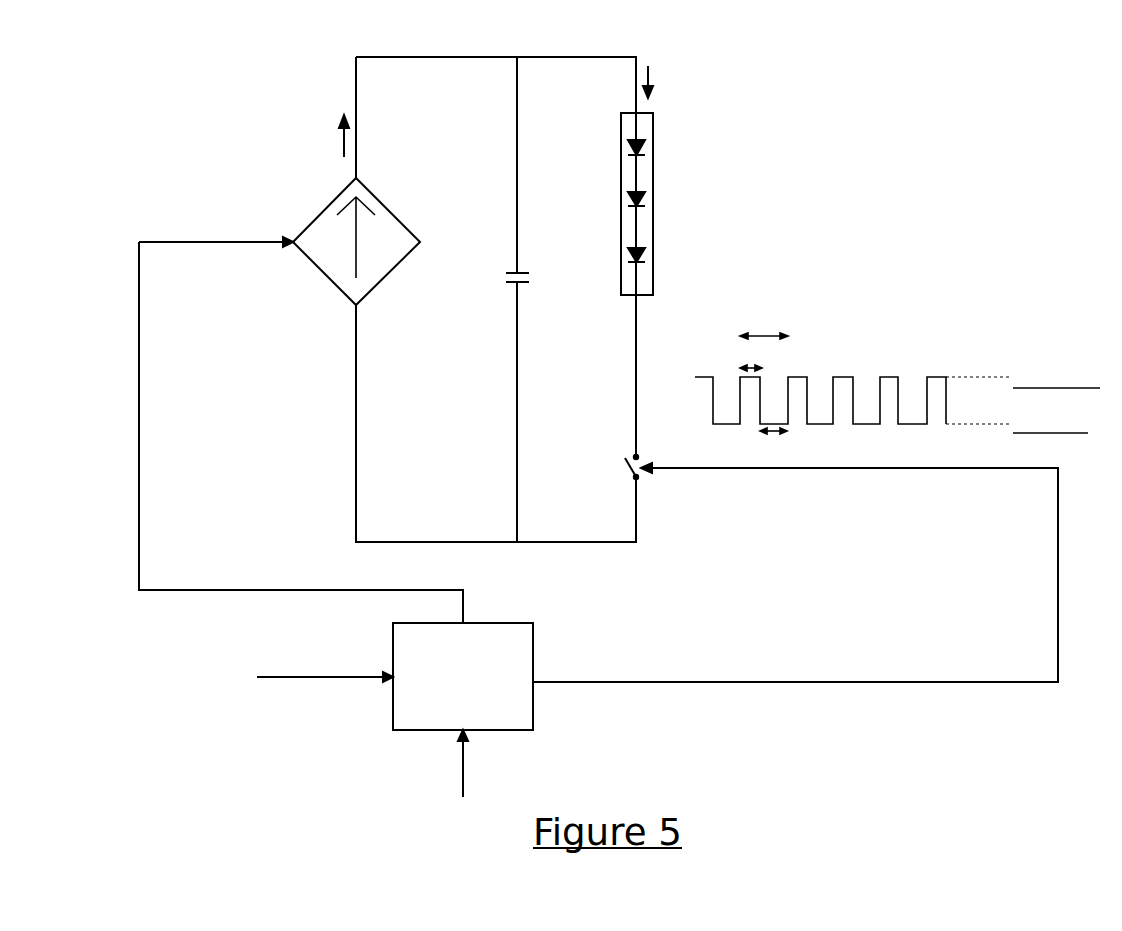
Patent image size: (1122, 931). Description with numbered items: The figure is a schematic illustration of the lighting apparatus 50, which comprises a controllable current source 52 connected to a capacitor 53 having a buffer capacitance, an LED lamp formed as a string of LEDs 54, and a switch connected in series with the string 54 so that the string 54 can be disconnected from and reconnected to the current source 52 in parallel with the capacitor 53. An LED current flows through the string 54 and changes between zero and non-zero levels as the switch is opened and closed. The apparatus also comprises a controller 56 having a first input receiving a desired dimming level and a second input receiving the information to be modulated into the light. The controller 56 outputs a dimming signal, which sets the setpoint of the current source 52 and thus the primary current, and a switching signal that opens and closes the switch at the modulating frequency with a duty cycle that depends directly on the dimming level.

The lighting apparatus 50 is at (182, 99).
The controllable current source 52 is at (322, 210).
The capacitor 53 is at (505, 283).
The string of LEDs 54 is at (653, 162).
The controller 56 is at (393, 730).